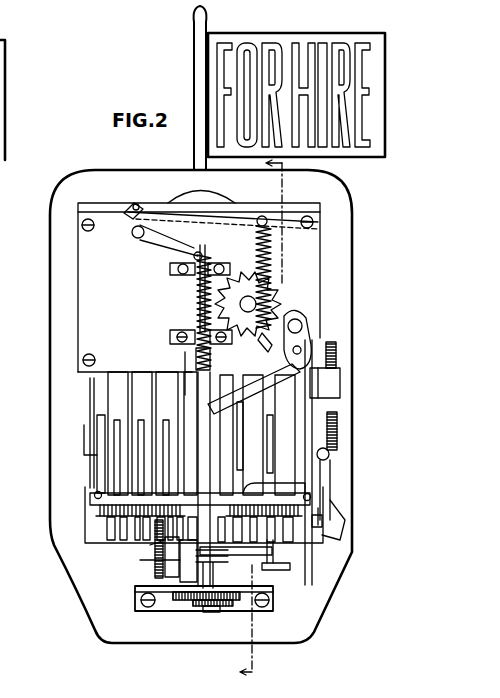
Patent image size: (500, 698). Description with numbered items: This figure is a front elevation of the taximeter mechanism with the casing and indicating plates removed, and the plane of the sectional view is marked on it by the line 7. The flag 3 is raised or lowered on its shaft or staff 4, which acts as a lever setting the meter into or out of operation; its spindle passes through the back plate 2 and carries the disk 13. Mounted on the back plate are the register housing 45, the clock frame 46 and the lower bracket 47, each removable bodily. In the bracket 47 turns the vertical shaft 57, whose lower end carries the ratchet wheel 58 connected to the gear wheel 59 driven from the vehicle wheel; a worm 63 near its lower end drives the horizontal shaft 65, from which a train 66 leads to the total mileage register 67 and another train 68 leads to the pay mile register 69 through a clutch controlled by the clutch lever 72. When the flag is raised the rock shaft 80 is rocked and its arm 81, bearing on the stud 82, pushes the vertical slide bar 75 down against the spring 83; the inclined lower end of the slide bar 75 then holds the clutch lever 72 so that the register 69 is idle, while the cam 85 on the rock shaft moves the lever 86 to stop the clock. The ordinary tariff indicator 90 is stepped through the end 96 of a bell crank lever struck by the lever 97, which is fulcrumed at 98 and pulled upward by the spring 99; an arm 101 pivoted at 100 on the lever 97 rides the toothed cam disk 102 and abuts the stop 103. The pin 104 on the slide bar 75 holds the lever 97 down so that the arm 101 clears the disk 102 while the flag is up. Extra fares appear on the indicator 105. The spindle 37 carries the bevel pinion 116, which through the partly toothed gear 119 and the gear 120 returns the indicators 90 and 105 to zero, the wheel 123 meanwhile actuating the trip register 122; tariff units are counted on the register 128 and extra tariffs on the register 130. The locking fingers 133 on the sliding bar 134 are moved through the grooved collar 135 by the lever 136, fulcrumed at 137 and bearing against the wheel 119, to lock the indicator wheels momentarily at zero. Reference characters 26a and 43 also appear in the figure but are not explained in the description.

The back plate 2 is at (49, 251).
The signal or flag 3 is at (306, 36).
The flag shaft or staff 4 is at (192, 61).
The section line 7— 7 is at (248, 424).
The disk 13 is at (190, 195).
The shaft 26a is at (13, 213).
The spindle of the flag unlocking means 37 is at (9, 403).
The plate 43 is at (14, 333).
The register housing 45 is at (96, 427).
The clock frame 46 is at (199, 287).
The bracket or frame 47 is at (163, 606).
The vertical shaft 57 is at (258, 582).
The ratchet wheel 58 is at (196, 610).
The gear wheel 59 is at (243, 612).
The worm 63 is at (223, 552).
The horizontal shaft 65 is at (280, 566).
The train of gearing 66 is at (274, 560).
The total mileage register 67 is at (240, 528).
The train of gearing 68 is at (157, 562).
The pay mile register 69 is at (165, 547).
The clutch lever 72 is at (154, 570).
The vertical slide bar 75 is at (205, 470).
The rock shaft 80 is at (131, 236).
The arm 81 is at (153, 244).
The stud 82 is at (206, 262).
The spring 83 is at (196, 308).
The cam 85 is at (126, 209).
The lever 86 is at (136, 203).
The ordinary tariff indicator 90 is at (151, 433).
The end of bell crank lever 96 is at (197, 358).
The lever 97 is at (290, 369).
The fulcrum 98 is at (292, 315).
The spring 99 is at (273, 254).
The pivot 100 is at (306, 350).
The arm 101 is at (265, 340).
The toothed cam disk 102 is at (248, 304).
The projection or stop 103 is at (341, 380).
The pin 104 is at (183, 378).
The extra tariff indicator 105 is at (261, 435).
The bevel pinion 116 is at (8, 320).
The partly toothed gear 119 is at (338, 352).
The gear 120 is at (338, 420).
The trip or initial fare register 122 is at (110, 527).
The wheel 123 is at (88, 383).
The register 128 is at (320, 478).
The register 130 is at (318, 532).
The locking fingers 133 is at (117, 492).
The horizontal sliding bar 134 is at (100, 521).
The grooved collar 135 is at (322, 522).
The lever 136 is at (328, 462).
The fulcrum 137 is at (328, 450).